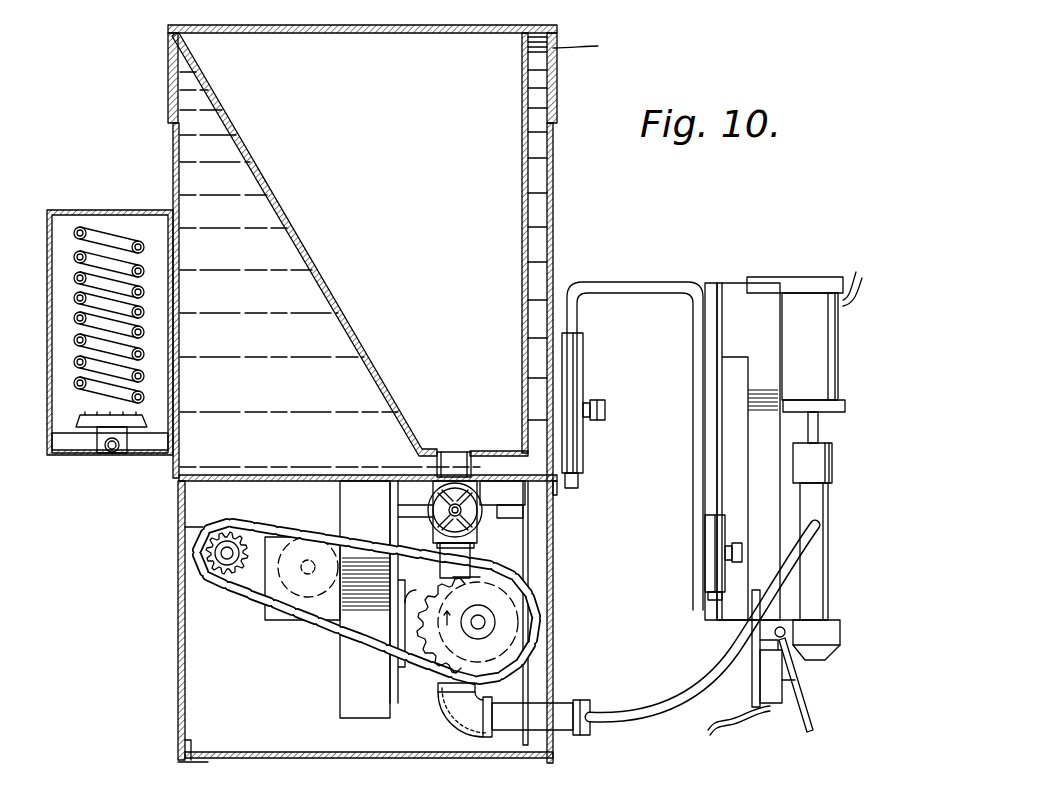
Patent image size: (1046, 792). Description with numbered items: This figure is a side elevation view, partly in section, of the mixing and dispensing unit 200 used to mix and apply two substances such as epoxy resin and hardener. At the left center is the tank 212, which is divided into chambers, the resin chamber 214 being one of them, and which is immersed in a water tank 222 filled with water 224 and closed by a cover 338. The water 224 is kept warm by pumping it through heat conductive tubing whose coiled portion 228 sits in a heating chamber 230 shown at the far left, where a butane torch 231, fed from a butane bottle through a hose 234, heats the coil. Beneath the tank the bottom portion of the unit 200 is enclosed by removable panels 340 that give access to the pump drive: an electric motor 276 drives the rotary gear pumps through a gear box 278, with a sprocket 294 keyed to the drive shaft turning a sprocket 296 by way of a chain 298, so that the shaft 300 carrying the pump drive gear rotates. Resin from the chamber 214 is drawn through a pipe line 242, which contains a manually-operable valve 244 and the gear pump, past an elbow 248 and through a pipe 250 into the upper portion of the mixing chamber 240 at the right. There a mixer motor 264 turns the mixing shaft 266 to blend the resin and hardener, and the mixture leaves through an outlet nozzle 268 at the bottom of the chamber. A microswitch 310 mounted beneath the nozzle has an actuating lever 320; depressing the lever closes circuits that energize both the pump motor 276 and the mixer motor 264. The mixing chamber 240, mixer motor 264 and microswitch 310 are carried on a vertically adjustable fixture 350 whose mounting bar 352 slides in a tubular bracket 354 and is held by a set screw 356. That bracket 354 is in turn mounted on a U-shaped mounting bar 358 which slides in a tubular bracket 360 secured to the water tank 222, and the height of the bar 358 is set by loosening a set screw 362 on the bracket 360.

The mixing and dispensing unit 200 is at (134, 554).
The tank 212 is at (222, 113).
The resin chamber 214 is at (414, 187).
The water tank 222 is at (553, 203).
The water 224 is at (330, 269).
The coiled portion of tubing 228 is at (115, 240).
The heating chamber 230 is at (88, 210).
The butane torch 231 is at (92, 418).
The hose 234 is at (104, 450).
The mixing chamber 240 is at (828, 503).
The pipe line 242 is at (468, 552).
The manually-operable valve 244 is at (477, 512).
The elbow 248 is at (470, 718).
The pipe 250 is at (688, 690).
The mixer motor 264 is at (815, 355).
The mixing shaft 266 is at (820, 414).
The outlet nozzle 268 is at (832, 647).
The electric motor 276 is at (421, 640).
The gear box 278 is at (271, 625).
The sprocket 294 is at (212, 558).
The sprocket 296 is at (502, 586).
The chain 298 is at (254, 524).
The shaft 300 is at (488, 622).
The microswitch 310 is at (785, 702).
The actuating lever 320 is at (808, 712).
The cover 338 is at (598, 47).
The panels 340 is at (180, 680).
The vertically adjustable fixture 350 is at (735, 290).
The mounting bar 352 is at (712, 283).
The tubular bracket 354 is at (714, 568).
The set screw 356 is at (738, 562).
The U-shaped mounting bar 358 is at (635, 258).
The tubular bracket 360 is at (578, 378).
The set screw 362 is at (605, 410).